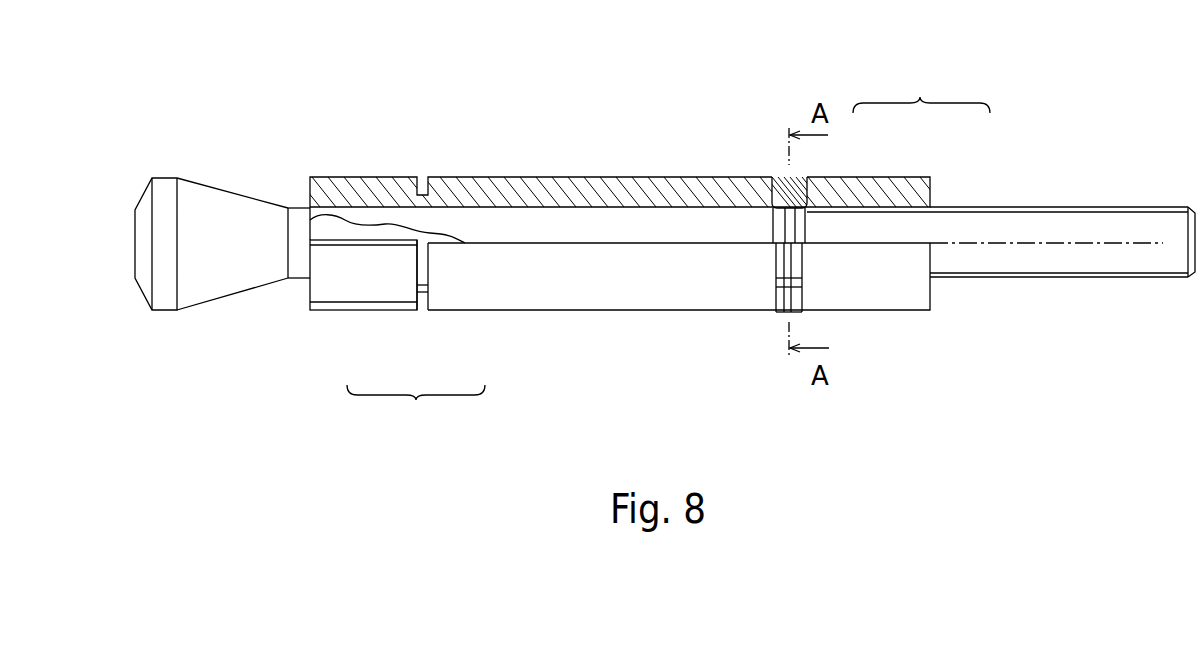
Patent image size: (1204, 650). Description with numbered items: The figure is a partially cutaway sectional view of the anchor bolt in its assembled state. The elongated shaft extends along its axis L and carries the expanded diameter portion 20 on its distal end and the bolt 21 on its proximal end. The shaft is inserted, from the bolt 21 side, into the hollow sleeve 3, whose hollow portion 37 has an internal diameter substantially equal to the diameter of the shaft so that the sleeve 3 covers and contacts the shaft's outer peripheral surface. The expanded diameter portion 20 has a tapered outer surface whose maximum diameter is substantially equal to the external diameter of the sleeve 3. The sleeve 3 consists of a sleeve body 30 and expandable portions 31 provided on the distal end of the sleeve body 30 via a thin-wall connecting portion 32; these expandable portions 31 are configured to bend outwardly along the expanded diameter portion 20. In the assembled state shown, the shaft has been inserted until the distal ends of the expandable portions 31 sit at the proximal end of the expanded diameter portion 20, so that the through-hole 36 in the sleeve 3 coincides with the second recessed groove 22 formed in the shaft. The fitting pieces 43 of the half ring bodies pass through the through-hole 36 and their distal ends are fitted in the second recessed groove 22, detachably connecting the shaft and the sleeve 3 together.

The hollow sleeve 3 is at (416, 410).
The expanded diameter portion 20 is at (240, 205).
The bolt 21 is at (965, 228).
The second recessed groove 22 is at (790, 228).
The sleeve body 30 is at (470, 298).
The expandable portions 31 is at (358, 290).
The thin-wall connecting portion 32 is at (423, 273).
The through-hole 36 is at (807, 257).
The hollow portion 37 is at (613, 218).
The fitting pieces 43 is at (778, 177).
The axis L is at (1025, 243).